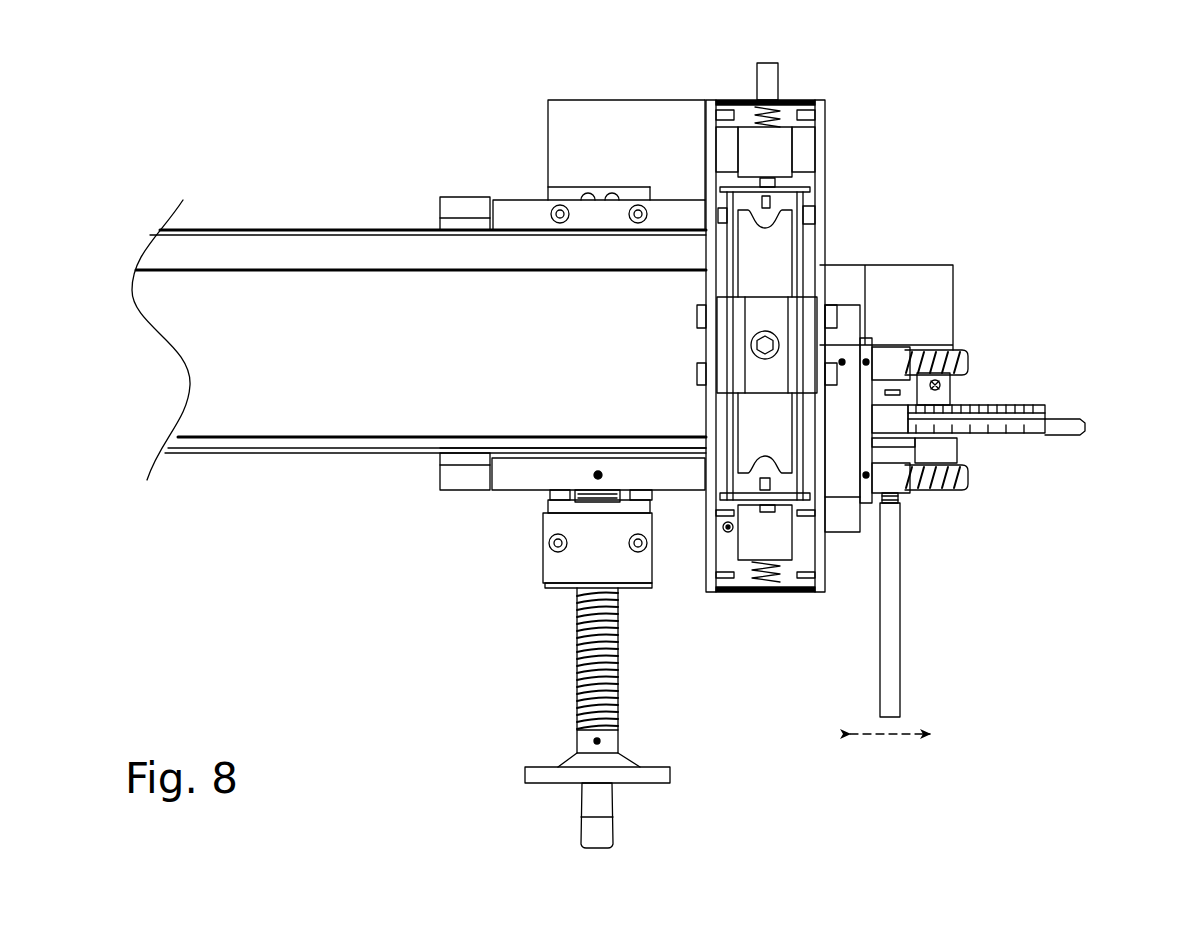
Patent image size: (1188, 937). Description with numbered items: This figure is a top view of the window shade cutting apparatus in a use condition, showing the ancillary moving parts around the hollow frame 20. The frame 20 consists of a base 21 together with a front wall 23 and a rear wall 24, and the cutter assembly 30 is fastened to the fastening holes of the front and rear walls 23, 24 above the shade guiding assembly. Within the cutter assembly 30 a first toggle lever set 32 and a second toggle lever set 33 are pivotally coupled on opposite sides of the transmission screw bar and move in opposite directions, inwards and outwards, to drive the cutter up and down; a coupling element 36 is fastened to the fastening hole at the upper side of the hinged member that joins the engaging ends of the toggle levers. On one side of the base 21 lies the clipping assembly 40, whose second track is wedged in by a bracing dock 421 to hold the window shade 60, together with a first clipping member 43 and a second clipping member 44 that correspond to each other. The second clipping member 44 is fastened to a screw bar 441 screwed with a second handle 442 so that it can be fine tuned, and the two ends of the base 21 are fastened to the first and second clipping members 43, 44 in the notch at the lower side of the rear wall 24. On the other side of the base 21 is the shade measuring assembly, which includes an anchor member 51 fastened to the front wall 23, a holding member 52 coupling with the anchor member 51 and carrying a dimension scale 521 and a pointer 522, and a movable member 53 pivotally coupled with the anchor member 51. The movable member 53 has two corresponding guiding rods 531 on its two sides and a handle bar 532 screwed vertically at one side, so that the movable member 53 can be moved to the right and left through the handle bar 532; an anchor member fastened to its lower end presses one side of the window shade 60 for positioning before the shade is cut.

The hollow frame 20 is at (735, 86).
The base 21 is at (660, 103).
The front wall 23 is at (822, 148).
The rear wall 24 is at (710, 142).
The cutter assembly 30 is at (805, 273).
The first toggle lever set 32 is at (765, 445).
The second toggle lever set 33 is at (794, 230).
The coupling element 36 is at (765, 322).
The clipping assembly 40 is at (364, 207).
The bracing dock 421 is at (455, 470).
The first clipping member 43 is at (522, 212).
The second clipping member 44 is at (525, 475).
The screw bar 441 is at (575, 657).
The second handle 442 is at (588, 830).
The anchor member 51 is at (850, 328).
The holding member 52 is at (1000, 440).
The dimension scale 521 is at (1040, 405).
The pointer 522 is at (952, 405).
The movable member 53 is at (945, 465).
The guiding rod 531 is at (1085, 427).
The handle bar 532 is at (893, 677).
The window shade 60 is at (285, 447).